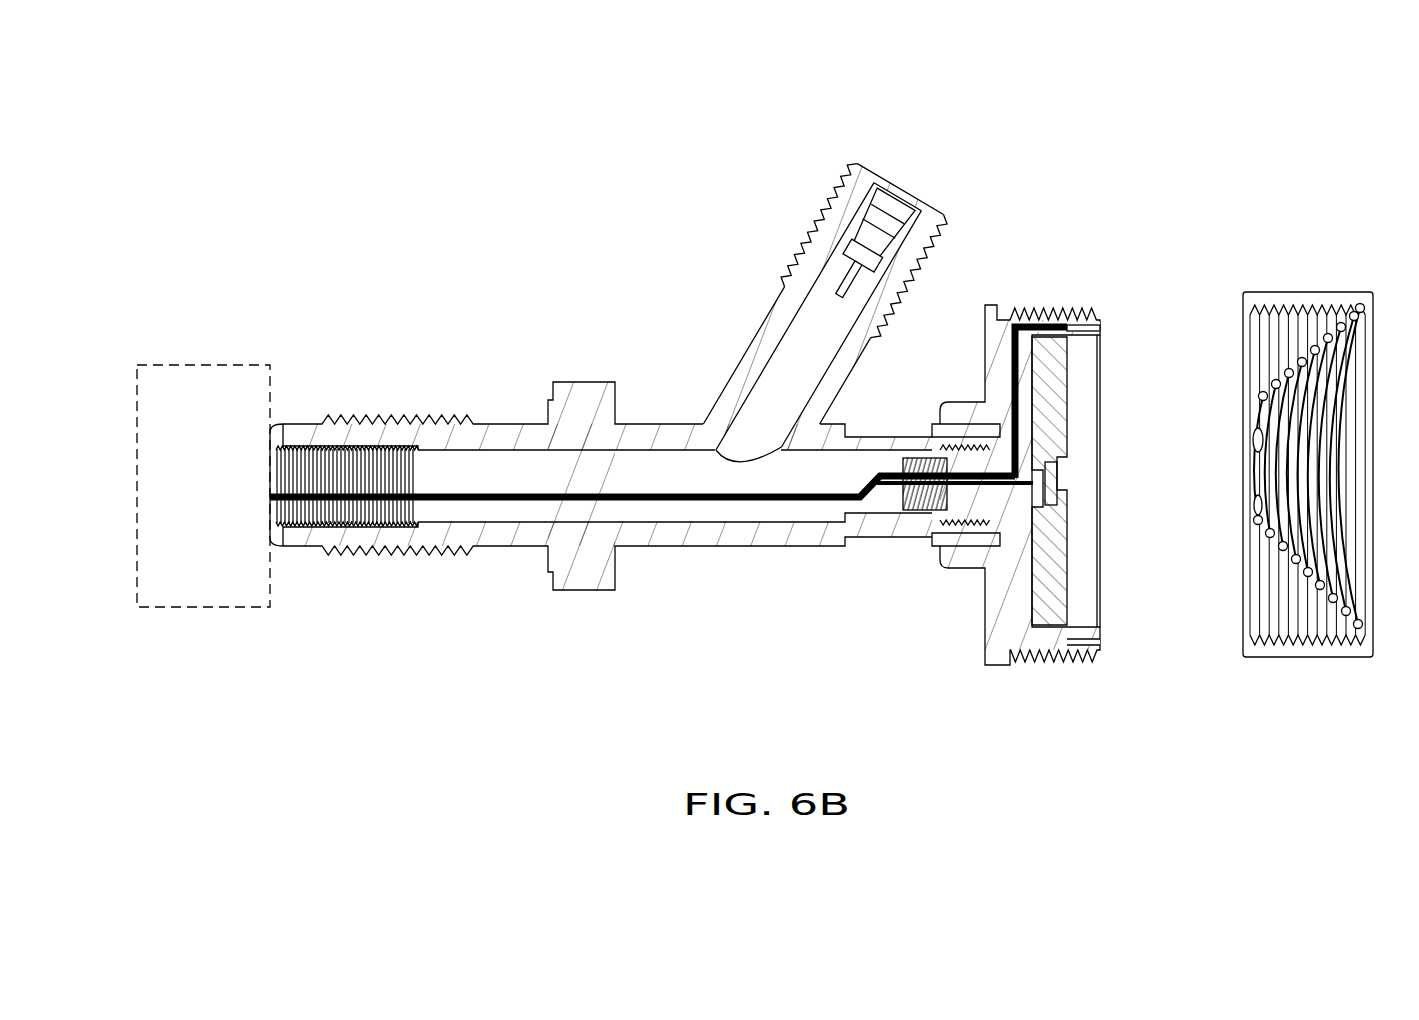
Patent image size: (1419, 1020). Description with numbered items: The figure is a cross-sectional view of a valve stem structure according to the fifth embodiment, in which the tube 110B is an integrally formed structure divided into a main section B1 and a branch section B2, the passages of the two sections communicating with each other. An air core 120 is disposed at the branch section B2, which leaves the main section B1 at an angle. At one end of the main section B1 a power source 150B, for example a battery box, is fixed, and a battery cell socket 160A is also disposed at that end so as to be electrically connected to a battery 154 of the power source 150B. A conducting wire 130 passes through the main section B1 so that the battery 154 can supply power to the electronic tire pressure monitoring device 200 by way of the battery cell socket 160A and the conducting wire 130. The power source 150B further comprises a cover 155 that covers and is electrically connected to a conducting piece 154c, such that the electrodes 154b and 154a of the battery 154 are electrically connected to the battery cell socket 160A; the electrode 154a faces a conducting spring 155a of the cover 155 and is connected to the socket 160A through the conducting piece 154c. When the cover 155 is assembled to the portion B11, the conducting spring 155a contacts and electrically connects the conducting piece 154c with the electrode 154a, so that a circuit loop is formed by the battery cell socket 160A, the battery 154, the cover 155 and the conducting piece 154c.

The tube 110B is at (578, 337).
The main section B1 is at (498, 548).
The branch section B2 is at (733, 363).
The portion B11 is at (1060, 663).
The air core 120 is at (840, 192).
The conducting wire 130 is at (732, 505).
The power source 150B is at (842, 355).
The battery 154 is at (1043, 450).
The electrode 154a is at (1062, 450).
The electrode 154b is at (1030, 420).
The conducting piece 154c is at (1082, 328).
The cover 155 is at (1284, 450).
The conducting spring 155a is at (1270, 498).
The battery cell socket 160A is at (909, 500).
The electronic tire pressure monitoring device 200 is at (197, 365).